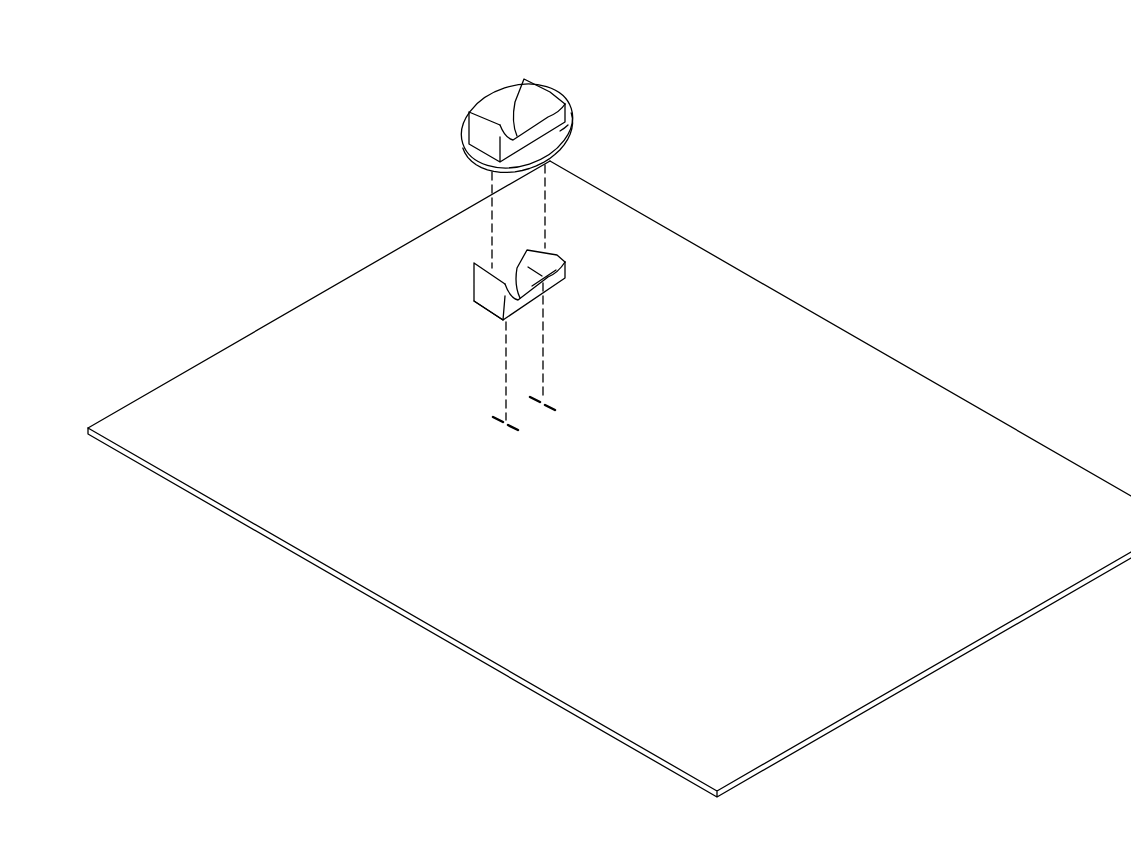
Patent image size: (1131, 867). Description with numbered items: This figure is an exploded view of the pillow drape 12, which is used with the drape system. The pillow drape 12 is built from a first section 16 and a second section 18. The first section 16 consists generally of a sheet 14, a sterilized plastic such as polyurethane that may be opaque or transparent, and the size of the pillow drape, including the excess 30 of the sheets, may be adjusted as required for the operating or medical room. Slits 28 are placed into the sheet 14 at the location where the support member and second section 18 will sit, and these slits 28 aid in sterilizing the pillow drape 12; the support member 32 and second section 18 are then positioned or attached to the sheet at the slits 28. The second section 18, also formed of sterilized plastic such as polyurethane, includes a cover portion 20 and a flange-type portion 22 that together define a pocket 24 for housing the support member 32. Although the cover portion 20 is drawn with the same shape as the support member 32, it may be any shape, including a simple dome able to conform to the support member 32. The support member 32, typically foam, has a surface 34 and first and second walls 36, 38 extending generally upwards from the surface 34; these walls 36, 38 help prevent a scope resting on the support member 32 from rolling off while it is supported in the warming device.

The pillow drape 12 is at (804, 211).
The sheet 14 is at (783, 308).
The first section 16 is at (298, 317).
The excess 30 is at (922, 390).
The second section 18 is at (517, 125).
The cover portion 20 is at (547, 92).
The flange-type portion 22 is at (567, 132).
The pocket 24 is at (490, 106).
The slits 28 is at (547, 403).
The support member 32 is at (720, 268).
The surface 34 is at (553, 256).
The first wall 36 is at (527, 250).
The second wall 38 is at (478, 287).